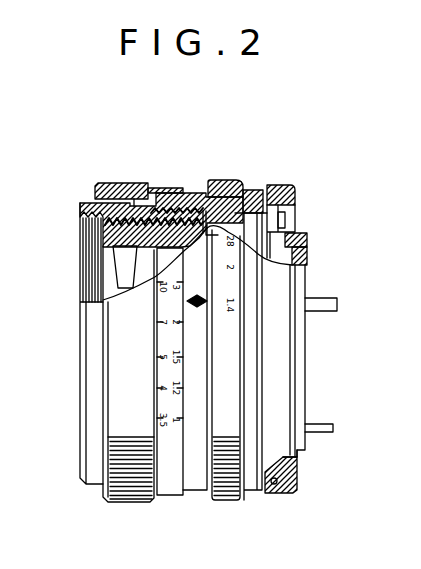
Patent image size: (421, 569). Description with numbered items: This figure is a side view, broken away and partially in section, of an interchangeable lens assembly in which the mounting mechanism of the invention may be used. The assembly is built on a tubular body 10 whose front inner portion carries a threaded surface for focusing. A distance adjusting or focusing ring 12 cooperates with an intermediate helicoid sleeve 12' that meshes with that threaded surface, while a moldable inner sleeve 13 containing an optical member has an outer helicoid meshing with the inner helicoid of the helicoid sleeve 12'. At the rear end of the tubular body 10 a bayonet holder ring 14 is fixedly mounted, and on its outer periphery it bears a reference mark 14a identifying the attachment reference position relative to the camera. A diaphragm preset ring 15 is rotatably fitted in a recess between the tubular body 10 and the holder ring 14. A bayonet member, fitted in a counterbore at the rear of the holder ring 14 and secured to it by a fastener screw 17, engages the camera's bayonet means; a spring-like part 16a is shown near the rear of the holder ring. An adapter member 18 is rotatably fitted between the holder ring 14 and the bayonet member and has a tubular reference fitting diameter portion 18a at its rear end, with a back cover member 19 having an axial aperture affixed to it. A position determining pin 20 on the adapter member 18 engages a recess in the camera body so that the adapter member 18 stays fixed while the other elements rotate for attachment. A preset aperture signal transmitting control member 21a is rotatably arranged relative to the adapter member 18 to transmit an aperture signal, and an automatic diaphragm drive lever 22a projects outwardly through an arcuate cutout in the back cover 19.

The tubular body 10 is at (200, 196).
The focusing ring 12 is at (80, 308).
The intermediate helicoid sleeve 12' is at (121, 166).
The moldable inner sleeve 13 is at (157, 198).
The bayonet holder ring 14 is at (275, 278).
The reference mark 14a is at (282, 186).
The diaphragm preset ring 15 is at (220, 240).
The spring member 16a is at (296, 203).
The fastener screw 17 is at (300, 488).
The adapter member 18 is at (302, 242).
The reference fitting diameter portion 18a is at (297, 457).
The back cover member 19 is at (303, 263).
The position determining pin 20 is at (285, 225).
The preset aperture signal transmitting control member 21a is at (337, 304).
The automatic diaphragm drive lever 22a is at (335, 426).